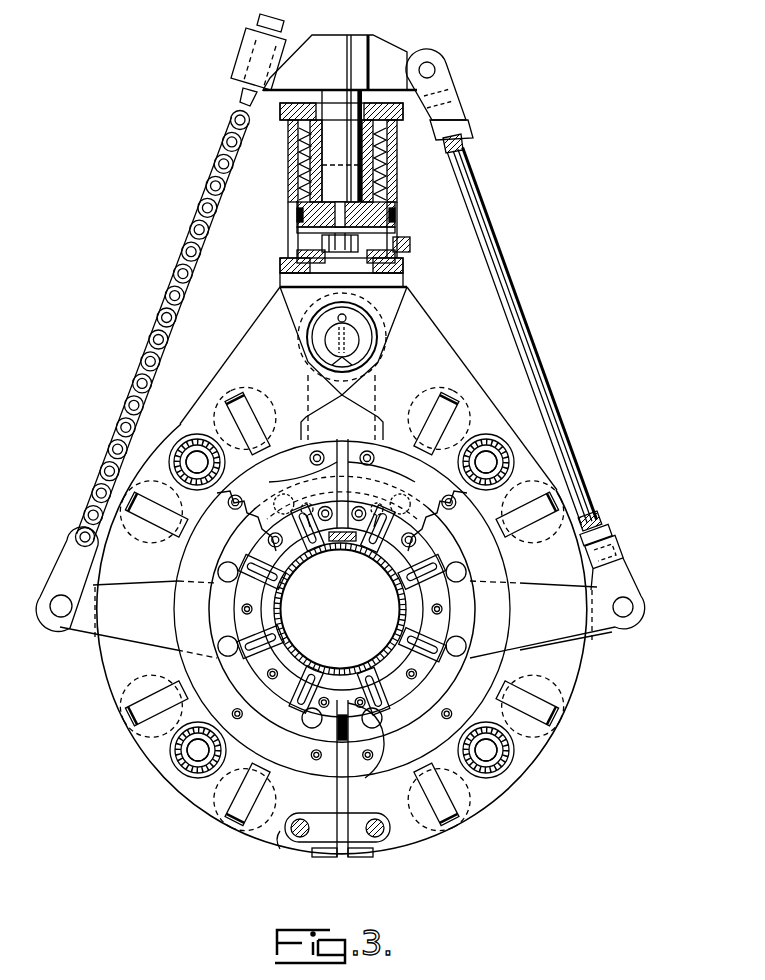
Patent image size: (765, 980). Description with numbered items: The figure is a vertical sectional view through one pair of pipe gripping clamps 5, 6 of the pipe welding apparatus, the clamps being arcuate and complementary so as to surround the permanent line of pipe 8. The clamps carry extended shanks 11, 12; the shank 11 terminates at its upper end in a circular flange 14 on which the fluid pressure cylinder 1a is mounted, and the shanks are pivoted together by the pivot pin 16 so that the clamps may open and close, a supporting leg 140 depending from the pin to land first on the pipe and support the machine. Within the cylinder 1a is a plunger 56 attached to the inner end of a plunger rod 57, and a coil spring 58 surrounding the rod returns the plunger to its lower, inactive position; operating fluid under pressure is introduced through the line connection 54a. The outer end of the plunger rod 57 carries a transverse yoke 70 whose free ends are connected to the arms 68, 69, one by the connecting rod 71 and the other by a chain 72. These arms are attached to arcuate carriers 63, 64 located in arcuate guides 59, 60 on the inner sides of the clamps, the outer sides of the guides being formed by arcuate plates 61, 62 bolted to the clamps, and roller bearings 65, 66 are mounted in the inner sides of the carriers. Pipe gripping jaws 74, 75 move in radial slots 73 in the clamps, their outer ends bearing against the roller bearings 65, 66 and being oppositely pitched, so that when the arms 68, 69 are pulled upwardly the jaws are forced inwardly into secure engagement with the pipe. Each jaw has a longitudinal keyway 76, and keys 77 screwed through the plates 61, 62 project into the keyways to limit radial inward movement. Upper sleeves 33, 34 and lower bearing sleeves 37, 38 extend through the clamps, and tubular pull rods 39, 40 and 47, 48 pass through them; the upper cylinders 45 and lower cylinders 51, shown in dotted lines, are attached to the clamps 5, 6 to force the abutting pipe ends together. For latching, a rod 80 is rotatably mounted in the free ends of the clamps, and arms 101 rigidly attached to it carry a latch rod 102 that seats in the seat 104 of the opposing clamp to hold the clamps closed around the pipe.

The transverse yoke 70 is at (388, 56).
The fluid pressure cylinder 1a is at (397, 197).
The plunger rod 57 is at (330, 153).
The coil spring 58 is at (383, 170).
The plunger 56 is at (298, 215).
The line connection 54a is at (410, 242).
The circular flange 14 is at (403, 277).
The pivot pin 16 is at (327, 333).
The extended shank 12 is at (263, 345).
The extended shank 11 is at (445, 337).
The supporting leg 140 is at (395, 392).
The chain 72 is at (182, 262).
The connecting rod 71 is at (515, 283).
The arm 69 is at (82, 628).
The arm 68 is at (567, 592).
The lower cylinder 51 is at (347, 639).
The arcuate carrier 63 is at (373, 609).
The radial slot 73 is at (317, 609).
The permanent line of pipe 8 is at (340, 609).
The longitudinal keyway 76 is at (341, 609).
The pipe gripping jaw 74 is at (408, 641).
The pipe gripping jaw 75 is at (302, 680).
The key 77 is at (337, 489).
The arcuate plate 62 is at (286, 484).
The arcuate plate 61 is at (407, 484).
The upper cylinder 45 is at (361, 597).
The upper sleeve 34 is at (188, 441).
The tubular pull rod 40 is at (174, 462).
The upper sleeve 33 is at (497, 446).
The tubular pull rod 39 is at (508, 462).
The lower bearing sleeve 38 is at (182, 767).
The tubular pull rod 48 is at (157, 766).
The lower bearing sleeve 37 is at (512, 752).
The tubular pull rod 47 is at (533, 749).
The roller bearing 66 is at (340, 601).
The roller bearing 65 is at (359, 746).
The arcuate guide 60 is at (285, 686).
The arcuate guide 59 is at (398, 677).
The arcuate carrier 64 is at (169, 578).
The pipe gripping clamp 6 is at (138, 667).
The pipe gripping clamp 5 is at (566, 650).
The arm 101 is at (337, 823).
The latch rod 102 is at (306, 853).
The rod 80 is at (391, 848).
The seat 104 is at (266, 854).